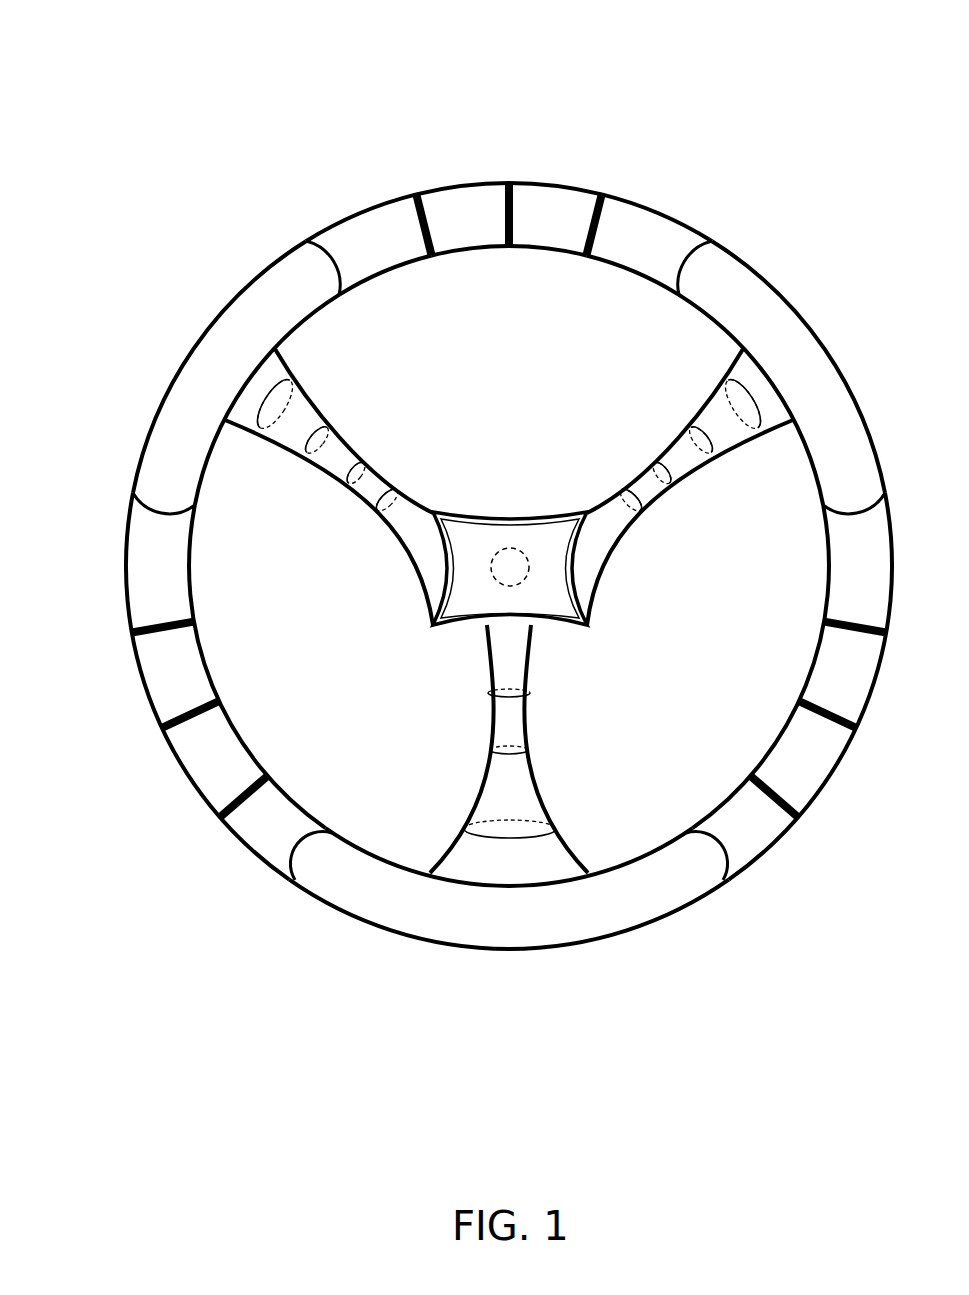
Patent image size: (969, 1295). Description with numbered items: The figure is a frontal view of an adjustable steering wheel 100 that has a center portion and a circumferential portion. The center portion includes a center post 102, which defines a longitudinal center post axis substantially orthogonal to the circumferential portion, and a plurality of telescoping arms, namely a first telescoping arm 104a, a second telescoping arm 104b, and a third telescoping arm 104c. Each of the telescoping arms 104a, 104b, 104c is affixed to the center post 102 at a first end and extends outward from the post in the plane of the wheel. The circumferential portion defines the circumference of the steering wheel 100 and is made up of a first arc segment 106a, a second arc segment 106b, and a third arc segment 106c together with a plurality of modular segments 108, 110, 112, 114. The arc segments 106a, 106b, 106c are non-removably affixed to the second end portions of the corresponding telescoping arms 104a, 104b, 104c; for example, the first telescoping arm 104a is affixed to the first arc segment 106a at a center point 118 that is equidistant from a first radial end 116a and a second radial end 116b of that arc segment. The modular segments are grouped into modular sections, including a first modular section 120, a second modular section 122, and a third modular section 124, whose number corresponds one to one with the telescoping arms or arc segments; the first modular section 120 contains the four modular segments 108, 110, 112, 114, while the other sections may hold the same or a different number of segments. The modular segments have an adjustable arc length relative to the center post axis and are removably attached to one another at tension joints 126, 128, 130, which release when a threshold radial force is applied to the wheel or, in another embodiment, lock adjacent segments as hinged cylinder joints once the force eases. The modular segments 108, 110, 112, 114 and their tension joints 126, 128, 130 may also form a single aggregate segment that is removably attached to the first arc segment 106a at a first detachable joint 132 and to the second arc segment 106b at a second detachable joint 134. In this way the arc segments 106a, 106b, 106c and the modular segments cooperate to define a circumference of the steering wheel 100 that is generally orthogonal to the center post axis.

The steering wheel 100 is at (792, 106).
The center post 102 is at (512, 511).
The first telescoping arm 104a is at (357, 445).
The second telescoping arm 104b is at (686, 442).
The third telescoping arm 104c is at (530, 733).
The first arc segment 106a is at (225, 308).
The second arc segment 106b is at (803, 315).
The third arc segment 106c is at (533, 950).
The modular segment 108 is at (352, 214).
The modular segment 110 is at (458, 186).
The modular segment 112 is at (548, 186).
The modular segment 114 is at (639, 207).
The first radial end 116a is at (155, 502).
The second radial end 116b is at (326, 262).
The center point 118 is at (231, 432).
The first modular section 120 is at (683, 330).
The second modular section 122 is at (813, 505).
The third modular section 124 is at (201, 505).
The tension joint 126 is at (423, 262).
The tension joint 128 is at (512, 250).
The tension joint 130 is at (594, 262).
The first detachable joint 132 is at (360, 292).
The second detachable joint 134 is at (690, 307).